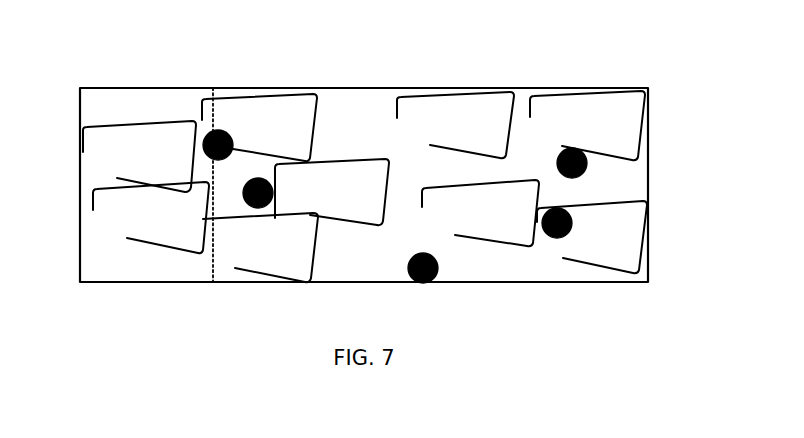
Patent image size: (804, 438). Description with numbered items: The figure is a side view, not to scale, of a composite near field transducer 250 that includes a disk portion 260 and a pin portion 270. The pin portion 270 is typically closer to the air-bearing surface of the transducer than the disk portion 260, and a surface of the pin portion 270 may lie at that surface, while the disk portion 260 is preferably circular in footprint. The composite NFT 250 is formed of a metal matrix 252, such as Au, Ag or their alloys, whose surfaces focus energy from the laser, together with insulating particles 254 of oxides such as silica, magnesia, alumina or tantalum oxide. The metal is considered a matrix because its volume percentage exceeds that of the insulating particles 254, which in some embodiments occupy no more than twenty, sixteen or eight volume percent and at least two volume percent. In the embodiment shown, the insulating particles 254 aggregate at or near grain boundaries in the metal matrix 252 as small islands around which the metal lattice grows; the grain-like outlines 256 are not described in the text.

The composite near field transducer 250 is at (382, 39).
The metal matrix 252 is at (648, 184).
The insulating particles 254 is at (230, 137).
The flaps 256 is at (339, 158).
The disk portion 260 is at (483, 74).
The pin portion 270 is at (155, 74).